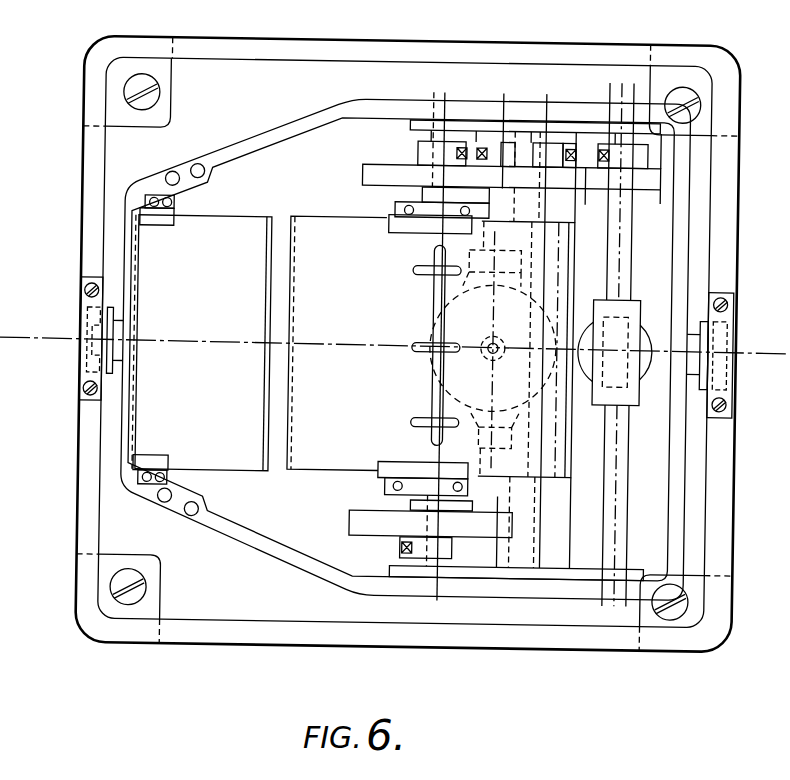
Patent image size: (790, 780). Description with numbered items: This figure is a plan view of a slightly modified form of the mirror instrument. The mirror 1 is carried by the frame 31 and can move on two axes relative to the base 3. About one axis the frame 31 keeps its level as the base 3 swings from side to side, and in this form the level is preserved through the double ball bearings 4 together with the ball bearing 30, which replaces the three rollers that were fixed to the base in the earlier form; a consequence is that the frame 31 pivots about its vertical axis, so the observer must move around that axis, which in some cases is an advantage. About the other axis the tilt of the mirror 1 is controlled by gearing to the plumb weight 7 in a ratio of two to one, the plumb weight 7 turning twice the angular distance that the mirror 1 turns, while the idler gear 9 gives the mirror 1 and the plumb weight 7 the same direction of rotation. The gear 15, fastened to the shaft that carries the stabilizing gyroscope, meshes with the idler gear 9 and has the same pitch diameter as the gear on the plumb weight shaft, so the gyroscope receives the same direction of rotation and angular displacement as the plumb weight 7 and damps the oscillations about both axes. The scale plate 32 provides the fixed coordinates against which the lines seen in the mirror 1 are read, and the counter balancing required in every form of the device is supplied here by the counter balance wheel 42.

The mirror 1 is at (293, 480).
The base 3 is at (235, 650).
The double ball bearings 4 is at (734, 392).
The plumb weight 7 is at (645, 385).
The idler gear 9 is at (569, 196).
The gear 15 is at (477, 130).
The ball bearing 30 is at (74, 320).
The frame 31 is at (283, 118).
The scale plate 32 is at (247, 208).
The counter balance wheel 42 is at (345, 520).